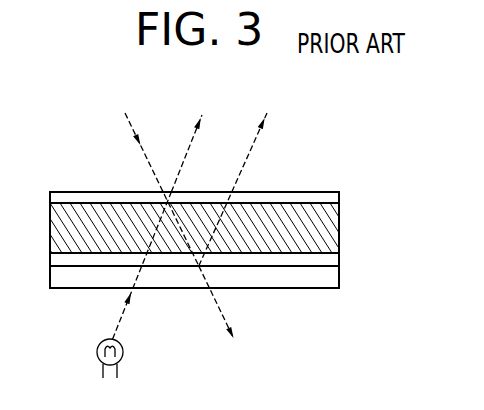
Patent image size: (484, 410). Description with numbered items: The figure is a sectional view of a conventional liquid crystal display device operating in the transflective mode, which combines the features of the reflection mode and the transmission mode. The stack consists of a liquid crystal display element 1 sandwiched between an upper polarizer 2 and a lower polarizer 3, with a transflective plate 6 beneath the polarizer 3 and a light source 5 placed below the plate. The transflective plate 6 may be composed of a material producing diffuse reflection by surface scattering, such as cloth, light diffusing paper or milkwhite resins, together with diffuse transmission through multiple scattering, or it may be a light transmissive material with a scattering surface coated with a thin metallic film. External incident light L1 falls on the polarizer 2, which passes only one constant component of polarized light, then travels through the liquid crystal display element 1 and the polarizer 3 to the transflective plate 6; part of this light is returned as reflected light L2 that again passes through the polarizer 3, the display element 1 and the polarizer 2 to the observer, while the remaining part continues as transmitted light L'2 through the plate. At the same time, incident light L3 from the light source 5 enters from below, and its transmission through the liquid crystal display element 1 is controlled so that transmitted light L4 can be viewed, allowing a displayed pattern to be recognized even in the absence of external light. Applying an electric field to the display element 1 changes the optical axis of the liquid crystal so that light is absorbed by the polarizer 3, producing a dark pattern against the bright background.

The liquid crystal display element 1 is at (330, 223).
The polarizer 2 is at (332, 199).
The polarizer 3 is at (330, 258).
The light source 5 is at (123, 355).
The transflective plate 6 is at (322, 280).
The incident light L1 is at (157, 176).
The reflected light L2 is at (242, 176).
The transmitted light L'2 is at (235, 315).
The incident light L3 is at (142, 265).
The transmitted light L4 is at (193, 139).